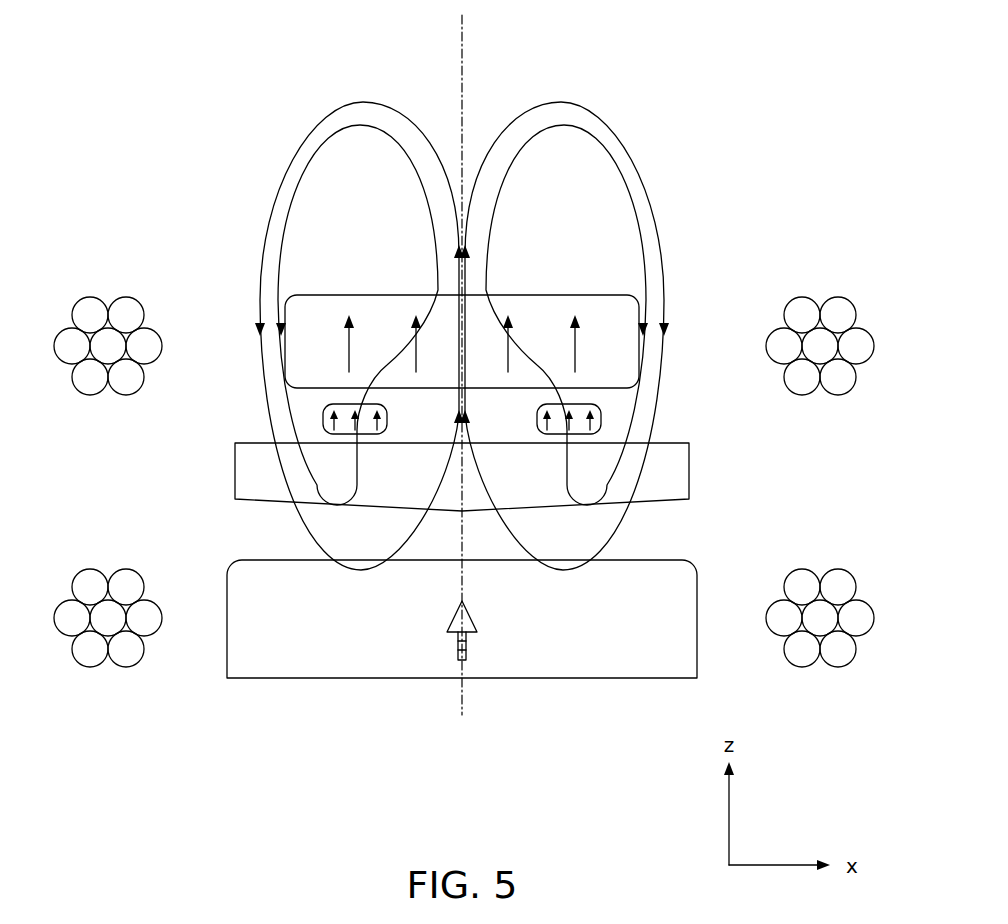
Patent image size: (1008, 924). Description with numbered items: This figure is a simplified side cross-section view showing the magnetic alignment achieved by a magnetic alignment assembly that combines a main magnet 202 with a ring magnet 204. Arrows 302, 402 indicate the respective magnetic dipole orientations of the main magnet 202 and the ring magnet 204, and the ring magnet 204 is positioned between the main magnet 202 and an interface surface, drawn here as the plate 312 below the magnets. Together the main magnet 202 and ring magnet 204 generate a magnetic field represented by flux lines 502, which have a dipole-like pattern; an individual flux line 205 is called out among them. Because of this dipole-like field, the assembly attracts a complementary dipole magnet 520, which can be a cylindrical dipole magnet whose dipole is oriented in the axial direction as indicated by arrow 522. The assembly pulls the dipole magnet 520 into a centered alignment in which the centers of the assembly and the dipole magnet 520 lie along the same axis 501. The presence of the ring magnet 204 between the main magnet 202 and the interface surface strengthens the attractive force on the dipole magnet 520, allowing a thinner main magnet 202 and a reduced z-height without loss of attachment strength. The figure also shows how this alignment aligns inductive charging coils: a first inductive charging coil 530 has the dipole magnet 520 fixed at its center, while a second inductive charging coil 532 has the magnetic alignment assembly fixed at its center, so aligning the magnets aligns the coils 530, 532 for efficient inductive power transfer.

The axis 501 is at (460, 48).
The flux lines 502 is at (322, 117).
The main magnet 202 is at (462, 308).
The arrow 302 is at (572, 340).
The ring magnet 204 is at (463, 398).
The arrow 402 is at (323, 428).
The magnetic flux line 205 is at (400, 397).
The plate 312 is at (235, 478).
The dipole magnet 520 is at (228, 575).
The arrow 522 is at (455, 622).
The first inductive charging coil 530 is at (90, 667).
The second inductive charging coil 532 is at (90, 297).